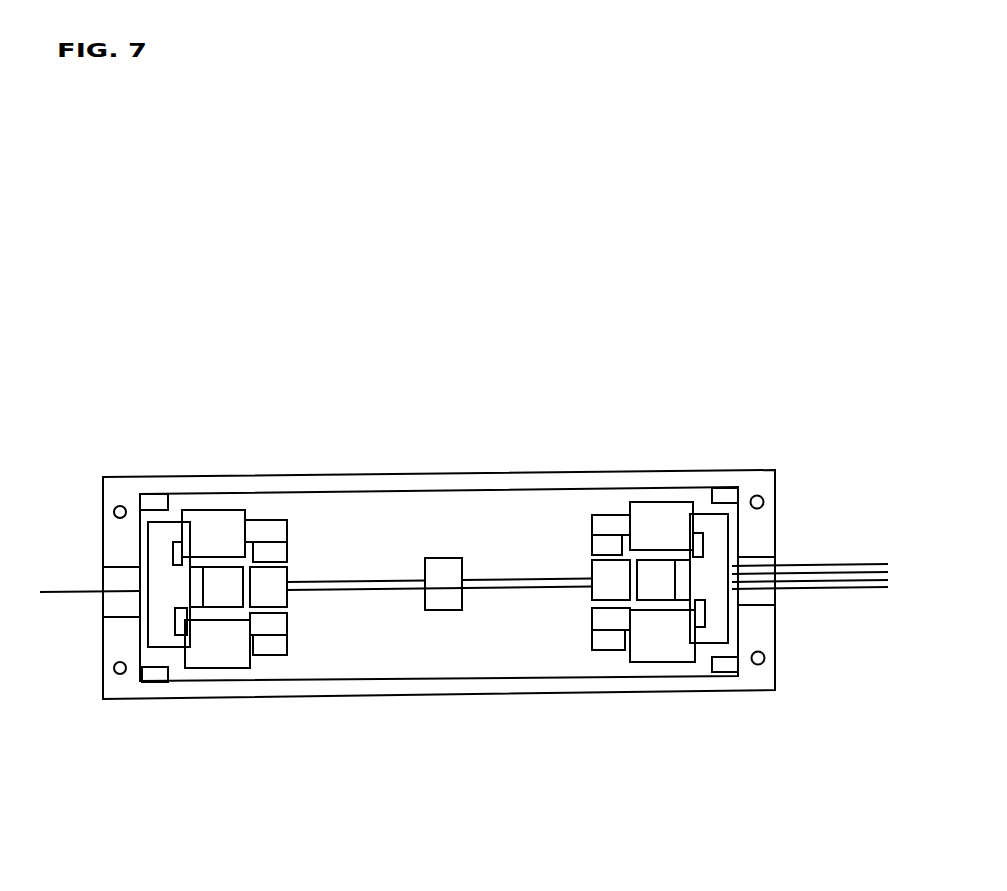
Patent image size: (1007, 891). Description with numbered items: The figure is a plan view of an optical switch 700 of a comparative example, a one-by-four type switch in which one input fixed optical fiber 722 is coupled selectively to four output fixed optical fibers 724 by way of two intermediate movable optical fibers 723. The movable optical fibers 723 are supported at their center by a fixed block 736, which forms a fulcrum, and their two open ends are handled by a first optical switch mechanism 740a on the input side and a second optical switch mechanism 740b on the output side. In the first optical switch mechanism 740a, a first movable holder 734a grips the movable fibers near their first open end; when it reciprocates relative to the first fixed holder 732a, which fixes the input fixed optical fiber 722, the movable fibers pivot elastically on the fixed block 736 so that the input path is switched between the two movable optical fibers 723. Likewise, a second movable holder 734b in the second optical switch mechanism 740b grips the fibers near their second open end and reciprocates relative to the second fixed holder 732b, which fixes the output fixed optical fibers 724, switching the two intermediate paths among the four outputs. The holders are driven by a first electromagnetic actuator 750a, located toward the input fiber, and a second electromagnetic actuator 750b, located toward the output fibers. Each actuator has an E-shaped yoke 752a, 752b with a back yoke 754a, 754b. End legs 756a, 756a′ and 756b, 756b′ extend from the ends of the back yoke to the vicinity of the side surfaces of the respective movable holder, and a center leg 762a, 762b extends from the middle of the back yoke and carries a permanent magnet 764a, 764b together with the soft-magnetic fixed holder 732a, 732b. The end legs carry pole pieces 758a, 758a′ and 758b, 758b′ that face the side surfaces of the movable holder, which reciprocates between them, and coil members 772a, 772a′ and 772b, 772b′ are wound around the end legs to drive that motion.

The optical switch 700 is at (113, 256).
The input fixed optical fiber 722 is at (73, 588).
The output fixed optical fibers 724 is at (863, 578).
The movable optical fibers 723 is at (393, 582).
The first movable holder 734a is at (293, 580).
The second movable holder 734b is at (592, 575).
The fixed block 736 is at (447, 572).
The first optical switch mechanism 740a is at (418, 792).
The second optical switch mechanism 740b is at (743, 788).
The first electromagnetic actuator 750a is at (290, 702).
The second electromagnetic actuator 750b is at (737, 697).
The E-shaped yoke 752a is at (150, 557).
The E-shaped yoke 752b is at (730, 544).
The back yoke 754a is at (165, 553).
The back yoke 754b is at (725, 545).
The end leg 756a is at (263, 527).
The end leg 756b is at (615, 522).
The pole piece 758a is at (278, 550).
The pole piece 758b is at (615, 545).
The center leg 762a is at (185, 586).
The center leg 762b is at (732, 613).
The permanent magnet 764a is at (147, 522).
The permanent magnet 764b is at (704, 545).
The coil member 772a is at (222, 590).
The coil member 772b is at (662, 582).
The coil member 772a′ is at (197, 641).
The coil member 772b′ is at (683, 633).
The pole piece 758a′ is at (287, 628).
The pole piece 758b′ is at (592, 617).
The end leg 756a′ is at (287, 650).
The end leg 756b′ is at (592, 645).
The first fixed holder 732a is at (207, 528).
The second fixed holder 732b is at (642, 510).